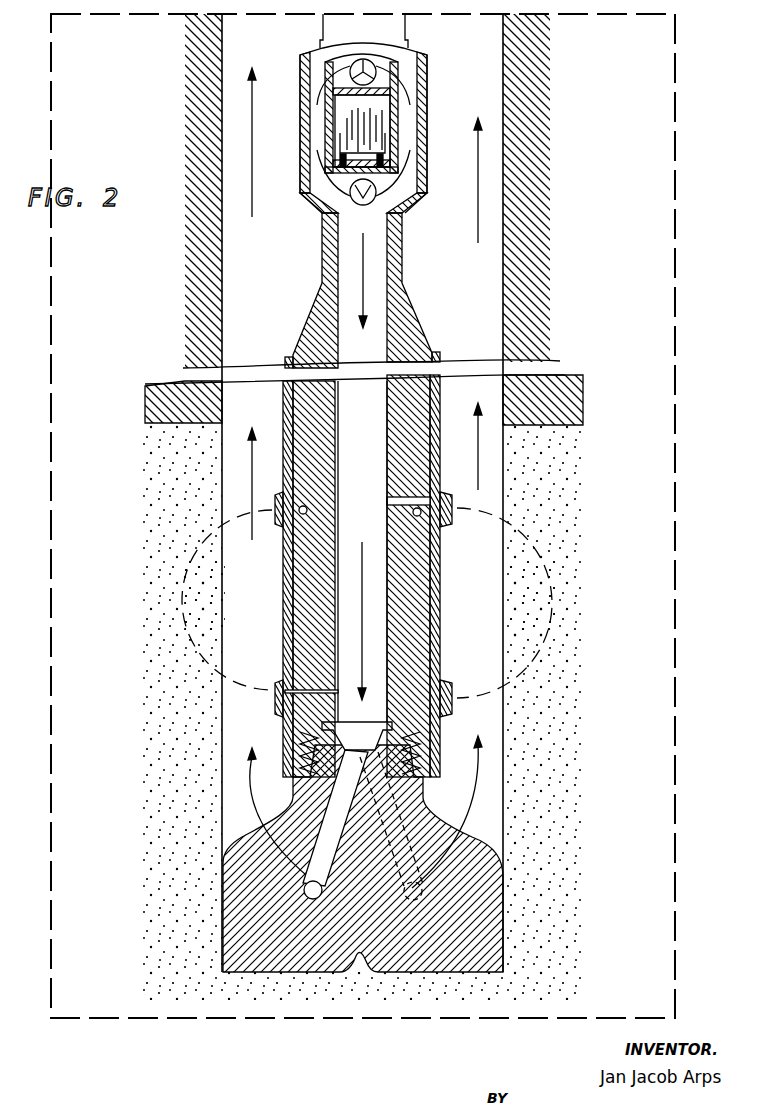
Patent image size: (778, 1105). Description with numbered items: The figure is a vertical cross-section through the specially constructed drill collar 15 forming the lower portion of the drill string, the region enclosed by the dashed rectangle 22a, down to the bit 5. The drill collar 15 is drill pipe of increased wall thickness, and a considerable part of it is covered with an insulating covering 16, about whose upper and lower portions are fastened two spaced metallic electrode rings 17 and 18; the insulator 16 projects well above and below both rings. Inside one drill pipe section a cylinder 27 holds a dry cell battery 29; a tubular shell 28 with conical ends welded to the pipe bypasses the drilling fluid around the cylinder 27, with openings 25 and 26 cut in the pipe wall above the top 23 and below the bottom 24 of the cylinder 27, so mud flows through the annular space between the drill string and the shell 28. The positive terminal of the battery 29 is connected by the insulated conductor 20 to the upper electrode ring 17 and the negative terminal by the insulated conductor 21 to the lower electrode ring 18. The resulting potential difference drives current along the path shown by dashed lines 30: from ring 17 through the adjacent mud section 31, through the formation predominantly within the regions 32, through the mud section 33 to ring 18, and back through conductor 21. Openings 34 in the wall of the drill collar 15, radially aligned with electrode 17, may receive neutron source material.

The bit 5 is at (497, 843).
The drill collar 15 is at (405, 156).
The insulating covering 16 is at (437, 592).
The upper electrode ring 17 is at (440, 511).
The lower electrode ring 18 is at (452, 712).
The insulated conductor 20 is at (385, 392).
The insulated conductor 21 is at (338, 400).
The dashed rectangle 22a is at (51, 413).
The top of cylinder 23 is at (380, 84).
The bottom of cylinder 24 is at (337, 166).
The upper opening 25 is at (366, 72).
The lower opening 26 is at (375, 196).
The cylinder 27 is at (397, 110).
The tubular shell 28 is at (428, 144).
The dry cell battery 29 is at (372, 123).
The current path 30 is at (192, 570).
The mud section 31 is at (377, 511).
The formation regions 32 is at (370, 600).
The mud section 33 is at (462, 698).
The openings 34 is at (300, 516).